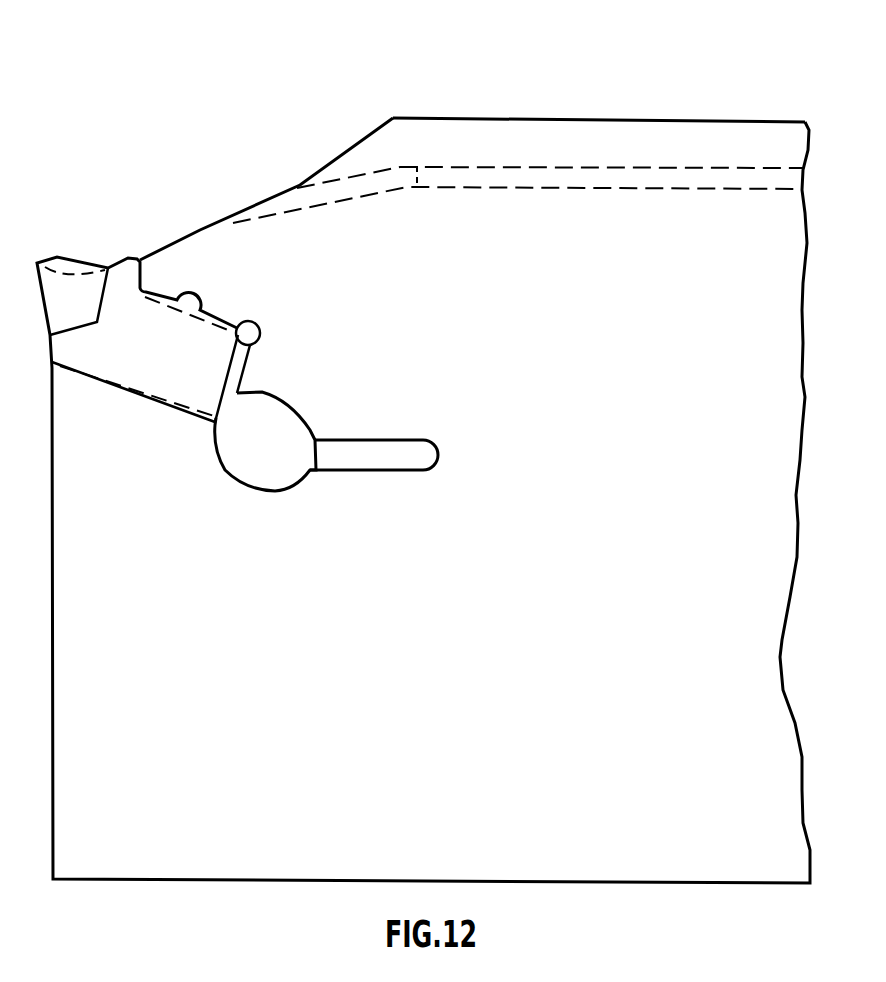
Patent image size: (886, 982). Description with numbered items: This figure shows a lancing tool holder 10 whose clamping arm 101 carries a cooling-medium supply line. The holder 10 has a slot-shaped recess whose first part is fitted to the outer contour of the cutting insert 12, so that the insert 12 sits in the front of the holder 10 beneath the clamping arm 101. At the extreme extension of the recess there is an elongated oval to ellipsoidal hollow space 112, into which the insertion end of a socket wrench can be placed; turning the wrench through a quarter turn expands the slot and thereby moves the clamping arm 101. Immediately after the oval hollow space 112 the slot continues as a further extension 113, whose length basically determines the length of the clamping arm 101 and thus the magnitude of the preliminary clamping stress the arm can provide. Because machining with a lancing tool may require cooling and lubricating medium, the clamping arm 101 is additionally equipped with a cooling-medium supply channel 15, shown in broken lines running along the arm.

The holder 10 is at (450, 678).
The cutting insert 12 is at (160, 367).
The cooling-medium supply channel 15 is at (520, 178).
The clamping arm 101 is at (222, 263).
The hollow space 112 is at (279, 457).
The further extension of the slot 113 is at (383, 460).